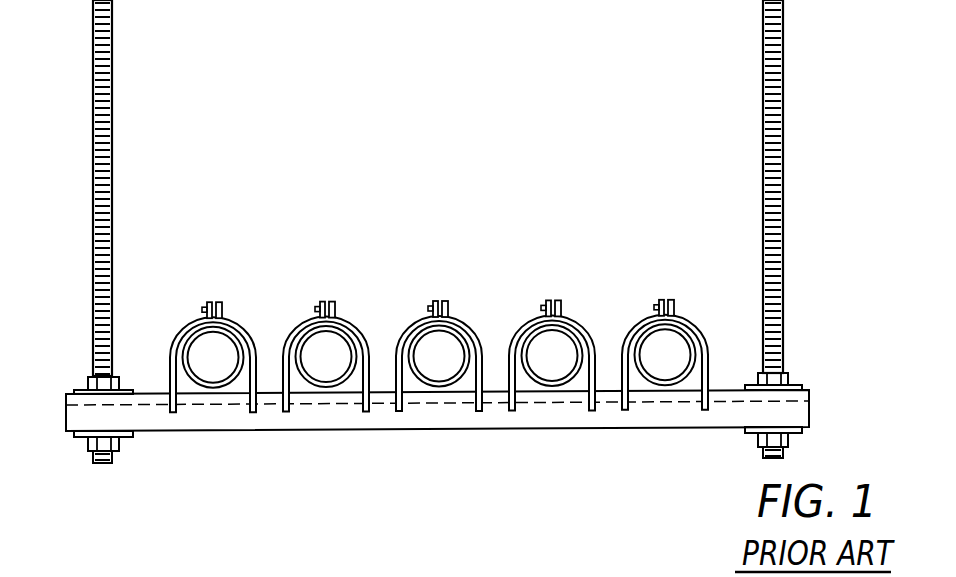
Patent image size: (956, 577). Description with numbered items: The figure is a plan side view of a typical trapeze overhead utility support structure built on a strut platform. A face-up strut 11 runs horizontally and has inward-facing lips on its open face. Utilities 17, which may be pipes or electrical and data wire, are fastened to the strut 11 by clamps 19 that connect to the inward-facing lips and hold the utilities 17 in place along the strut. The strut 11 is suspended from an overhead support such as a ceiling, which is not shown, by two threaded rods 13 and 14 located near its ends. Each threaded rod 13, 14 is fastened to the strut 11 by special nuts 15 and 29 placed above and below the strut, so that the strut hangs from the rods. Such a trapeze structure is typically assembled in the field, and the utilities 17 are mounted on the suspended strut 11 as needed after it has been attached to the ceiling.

The strut 11 is at (798, 408).
The threaded rod 13 is at (783, 169).
The threaded rod 14 is at (92, 176).
The nut 15 is at (88, 381).
The utilities 17 is at (326, 357).
The clamp 19 is at (320, 302).
The nut 29 is at (746, 434).